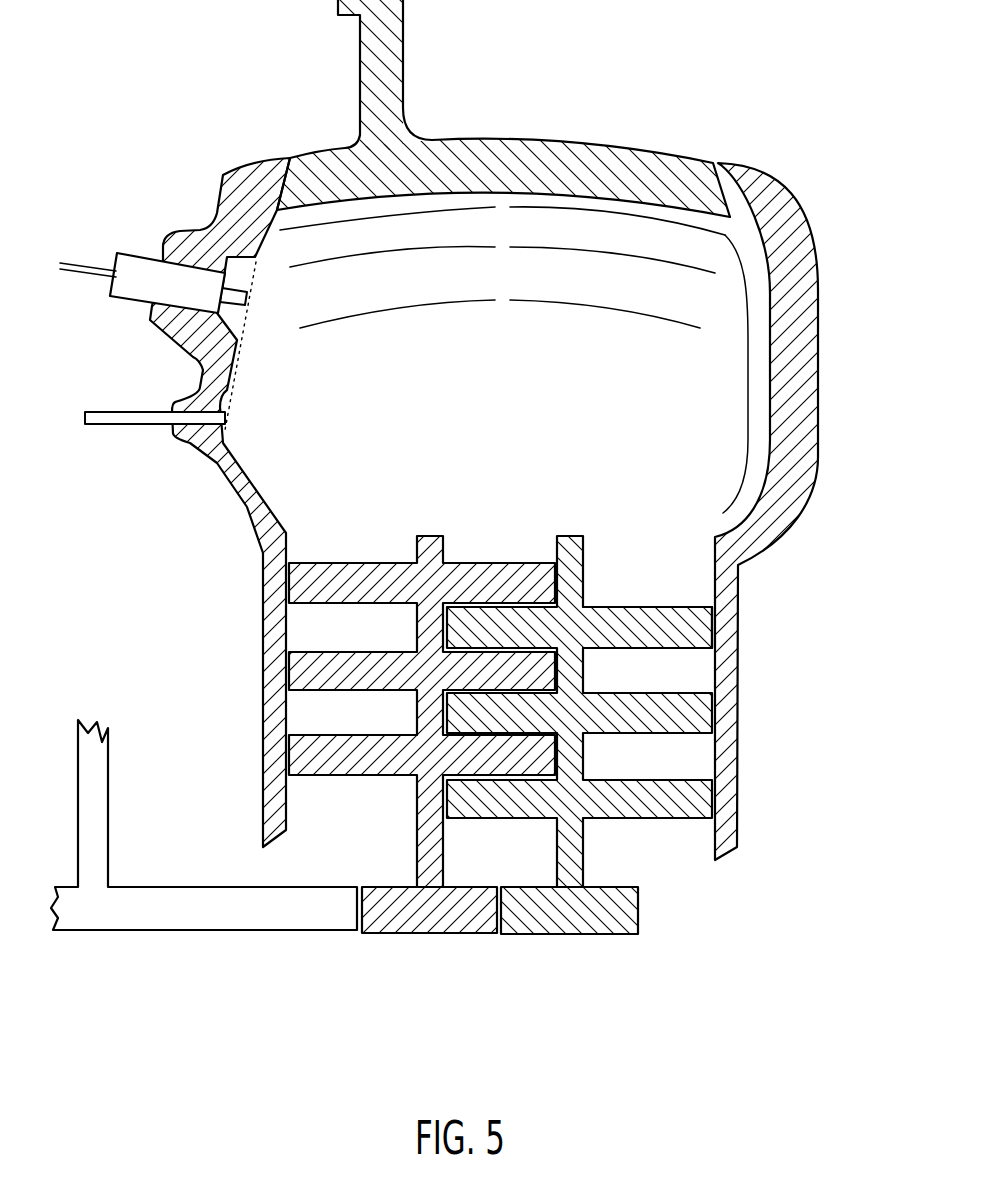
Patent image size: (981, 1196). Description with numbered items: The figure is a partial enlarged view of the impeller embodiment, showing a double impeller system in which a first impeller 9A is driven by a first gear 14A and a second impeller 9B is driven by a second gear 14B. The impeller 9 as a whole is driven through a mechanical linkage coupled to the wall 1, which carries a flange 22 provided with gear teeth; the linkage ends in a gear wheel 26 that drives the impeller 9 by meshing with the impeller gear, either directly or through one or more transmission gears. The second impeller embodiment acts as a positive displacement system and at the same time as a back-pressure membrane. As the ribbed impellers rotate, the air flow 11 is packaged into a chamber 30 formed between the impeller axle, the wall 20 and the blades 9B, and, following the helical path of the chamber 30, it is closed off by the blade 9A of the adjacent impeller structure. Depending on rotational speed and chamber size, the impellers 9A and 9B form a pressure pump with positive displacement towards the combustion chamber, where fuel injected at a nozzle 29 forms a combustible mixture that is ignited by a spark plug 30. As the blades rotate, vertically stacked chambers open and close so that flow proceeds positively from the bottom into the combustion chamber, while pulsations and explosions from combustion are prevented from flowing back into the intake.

The wall 1 is at (623, 165).
The flange 22 is at (393, 42).
The wall 20 is at (797, 250).
The chamber 30 is at (138, 253).
The nozzle 29 is at (140, 417).
The air flow 11 is at (544, 736).
The impeller 9 is at (697, 623).
The first impeller 9A is at (432, 542).
The second impeller 9B is at (572, 538).
The first gear 14A is at (405, 920).
The second gear 14B is at (613, 922).
The gear wheel 26 is at (148, 915).